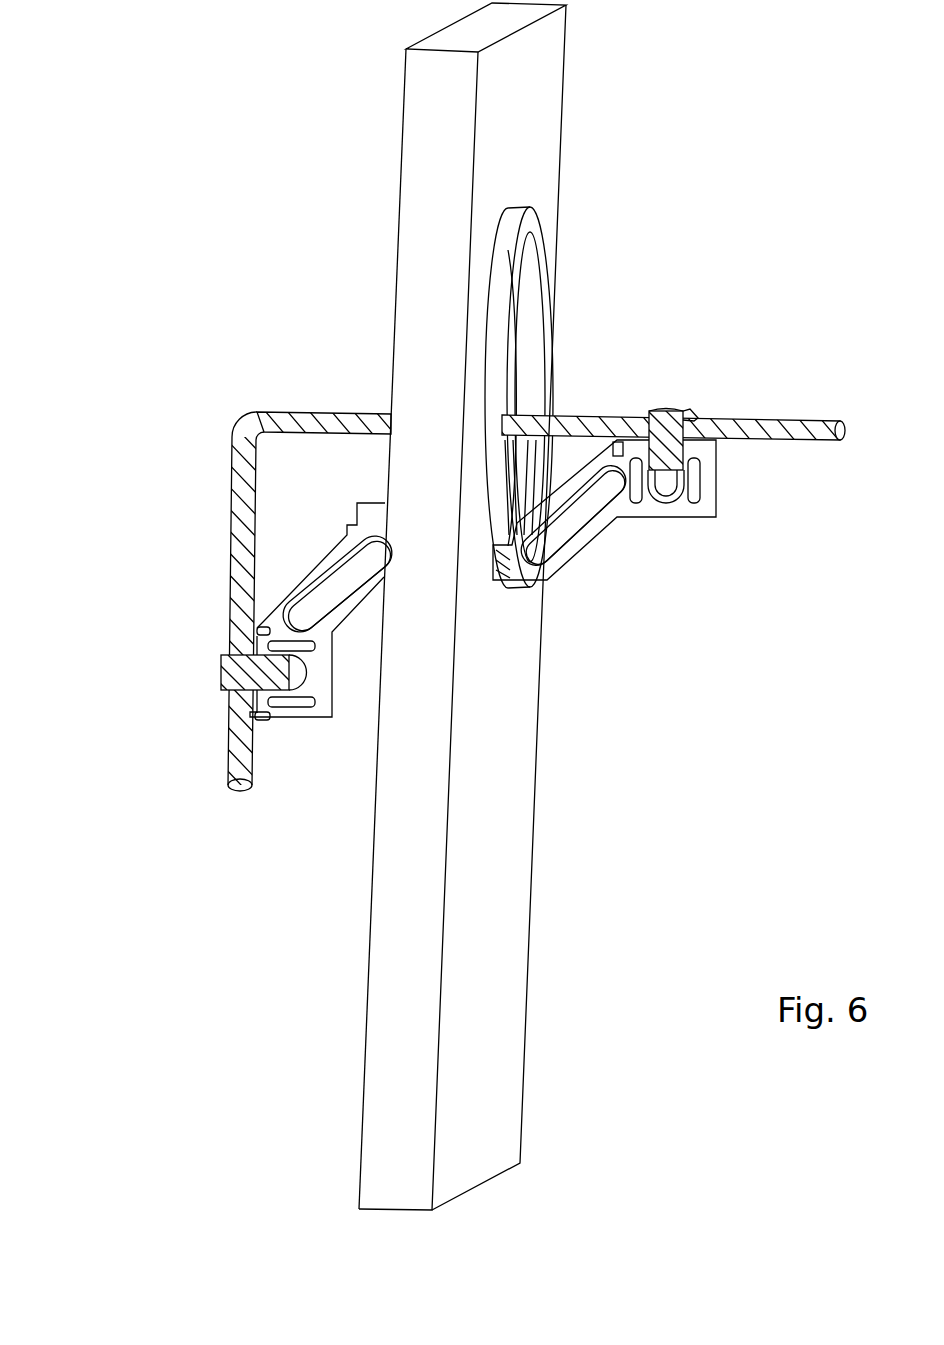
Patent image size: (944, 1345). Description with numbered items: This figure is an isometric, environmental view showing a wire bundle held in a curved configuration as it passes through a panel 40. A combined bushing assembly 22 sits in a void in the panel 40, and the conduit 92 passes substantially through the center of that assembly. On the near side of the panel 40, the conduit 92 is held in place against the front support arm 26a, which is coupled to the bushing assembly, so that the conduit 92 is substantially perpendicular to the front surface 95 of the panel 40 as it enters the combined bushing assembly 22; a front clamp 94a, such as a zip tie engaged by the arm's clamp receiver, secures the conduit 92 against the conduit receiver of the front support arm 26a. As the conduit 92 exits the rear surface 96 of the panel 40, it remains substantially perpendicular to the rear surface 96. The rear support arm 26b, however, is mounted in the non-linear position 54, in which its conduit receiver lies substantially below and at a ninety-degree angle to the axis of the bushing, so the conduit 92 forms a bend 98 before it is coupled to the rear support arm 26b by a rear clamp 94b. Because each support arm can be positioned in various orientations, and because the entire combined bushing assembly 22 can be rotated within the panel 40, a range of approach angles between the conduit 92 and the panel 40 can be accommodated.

The panel 40 is at (533, 110).
The front surface 95 is at (507, 153).
The rear surface 96 is at (390, 363).
The combined bushing assembly 22 is at (530, 228).
The bend 98 is at (235, 422).
The conduit 92 is at (778, 420).
The front clamp 94a is at (671, 407).
The rear clamp 94b is at (220, 672).
The front support arm 26a is at (590, 539).
The rear support arm 26b is at (295, 720).
The non-linear position 54 is at (315, 568).